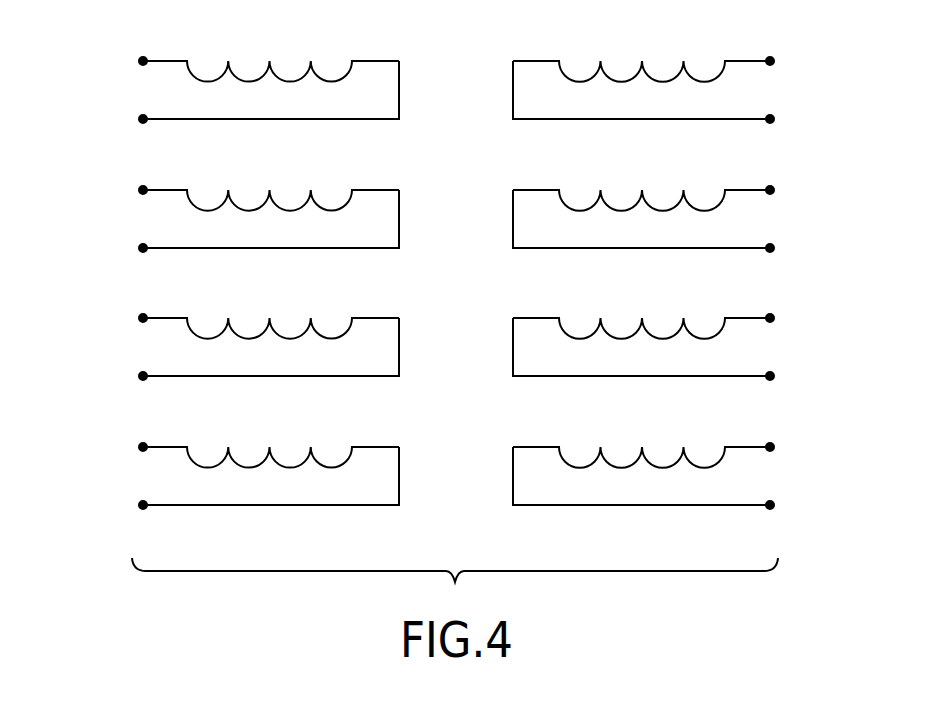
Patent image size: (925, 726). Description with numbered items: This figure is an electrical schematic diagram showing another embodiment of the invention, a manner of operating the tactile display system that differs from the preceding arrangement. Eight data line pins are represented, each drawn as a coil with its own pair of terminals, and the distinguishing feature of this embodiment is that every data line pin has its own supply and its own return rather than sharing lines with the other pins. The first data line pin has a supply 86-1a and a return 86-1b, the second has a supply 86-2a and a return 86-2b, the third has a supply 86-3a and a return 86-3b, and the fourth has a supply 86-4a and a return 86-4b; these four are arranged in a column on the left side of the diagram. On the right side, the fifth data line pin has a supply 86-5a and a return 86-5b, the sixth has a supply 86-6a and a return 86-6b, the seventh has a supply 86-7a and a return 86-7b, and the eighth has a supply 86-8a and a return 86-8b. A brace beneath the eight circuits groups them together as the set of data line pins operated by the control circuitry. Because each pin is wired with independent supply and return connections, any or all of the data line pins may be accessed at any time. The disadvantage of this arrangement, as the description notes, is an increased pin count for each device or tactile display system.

The supply of data line pin 86-1 86-1a is at (143, 61).
The return of data line pin 86-1 86-1b is at (143, 119).
The supply of data line pin 86-2 86-2a is at (143, 190).
The return of data line pin 86-2 86-2b is at (143, 248).
The supply of data line pin 86-3 86-3a is at (143, 318).
The return of data line pin 86-3 86-3b is at (143, 376).
The supply of data line pin 86-4 86-4a is at (143, 447).
The return of data line pin 86-4 86-4b is at (143, 505).
The supply of data line pin 86-5 86-5a is at (770, 61).
The return of data line pin 86-5 86-5b is at (770, 119).
The supply of data line pin 86-6 86-6a is at (770, 190).
The return of data line pin 86-6 86-6b is at (770, 248).
The supply of data line pin 86-7 86-7a is at (770, 318).
The return of data line pin 86-7 86-7b is at (770, 376).
The supply of data line pin 86-8 86-8a is at (770, 447).
The return of data line pin 86-8 86-8b is at (770, 505).